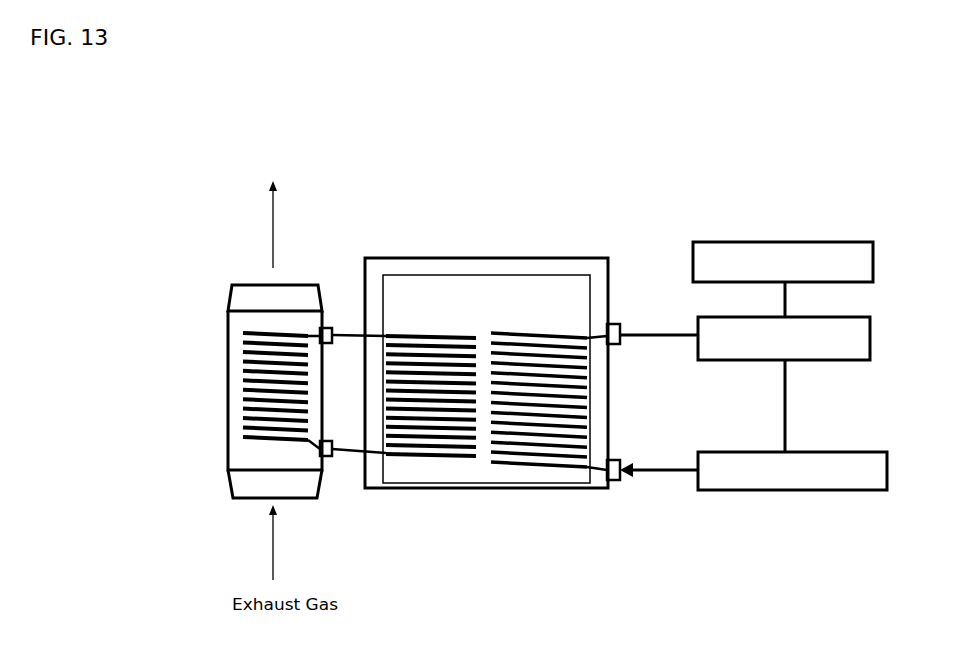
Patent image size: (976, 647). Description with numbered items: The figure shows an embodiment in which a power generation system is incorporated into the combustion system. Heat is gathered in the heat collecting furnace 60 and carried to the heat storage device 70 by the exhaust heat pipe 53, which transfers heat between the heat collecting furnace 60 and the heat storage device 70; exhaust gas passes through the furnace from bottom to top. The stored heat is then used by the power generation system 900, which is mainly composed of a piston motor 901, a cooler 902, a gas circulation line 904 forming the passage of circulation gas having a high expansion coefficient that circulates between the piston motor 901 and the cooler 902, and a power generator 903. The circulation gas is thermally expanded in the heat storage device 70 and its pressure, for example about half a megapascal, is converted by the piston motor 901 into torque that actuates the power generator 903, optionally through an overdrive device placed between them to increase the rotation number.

The heat collecting furnace 60 is at (226, 302).
The heat storage device 70 is at (493, 215).
The exhaust heat pipe 53 is at (386, 452).
The gas circulation line 904 is at (533, 457).
The power generation system 900 is at (778, 305).
The piston motor 901 is at (784, 338).
The cooler 902 is at (792, 471).
The power generator 903 is at (783, 262).